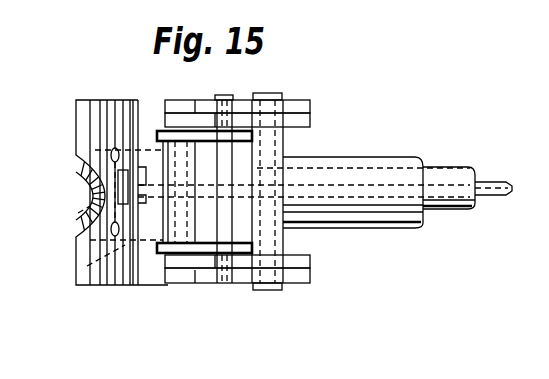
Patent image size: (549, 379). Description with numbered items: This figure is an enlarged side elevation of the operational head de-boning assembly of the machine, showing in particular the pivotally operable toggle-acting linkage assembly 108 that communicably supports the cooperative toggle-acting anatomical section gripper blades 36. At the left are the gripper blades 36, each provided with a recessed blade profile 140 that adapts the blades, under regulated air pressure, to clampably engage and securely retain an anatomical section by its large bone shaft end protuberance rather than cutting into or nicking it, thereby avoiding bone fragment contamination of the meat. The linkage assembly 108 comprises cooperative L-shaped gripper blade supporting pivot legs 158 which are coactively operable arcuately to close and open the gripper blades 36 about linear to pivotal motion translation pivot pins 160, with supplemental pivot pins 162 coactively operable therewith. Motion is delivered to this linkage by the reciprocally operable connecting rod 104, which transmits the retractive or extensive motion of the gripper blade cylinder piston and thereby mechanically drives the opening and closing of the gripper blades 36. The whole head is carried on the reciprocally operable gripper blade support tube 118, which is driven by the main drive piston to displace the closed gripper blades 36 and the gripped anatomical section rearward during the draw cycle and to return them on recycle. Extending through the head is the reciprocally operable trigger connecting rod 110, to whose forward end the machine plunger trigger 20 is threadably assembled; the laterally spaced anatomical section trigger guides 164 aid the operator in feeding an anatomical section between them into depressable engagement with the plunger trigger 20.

The machine plunger trigger 20 is at (78, 213).
The cooperative toggle-acting anatomical section gripper blades 36 is at (123, 285).
The reciprocally operable connecting rod 104 is at (443, 167).
The pivotally operable toggle-acting linkage assembly 108 is at (274, 80).
The reciprocally operable trigger connecting rod 110 is at (487, 182).
The reciprocally operable gripper blade support tube 118 is at (345, 156).
The recessed blade profile 140 is at (84, 196).
The "L"-shaped gripper blade supporting pivot legs 158 is at (176, 113).
The linear to pivotal motion translation pivot pins 160 is at (272, 92).
The supplemental pivot pins 162 is at (227, 96).
The laterally spaced anatomical section trigger guides 164 is at (87, 266).